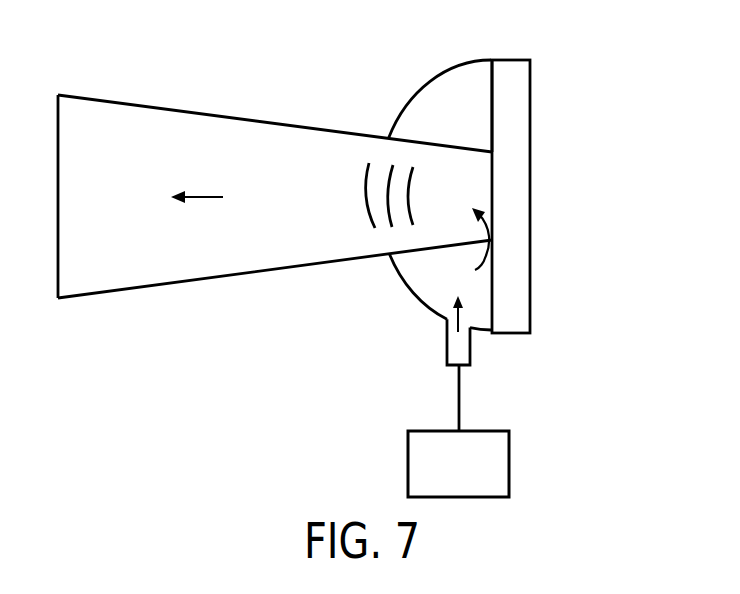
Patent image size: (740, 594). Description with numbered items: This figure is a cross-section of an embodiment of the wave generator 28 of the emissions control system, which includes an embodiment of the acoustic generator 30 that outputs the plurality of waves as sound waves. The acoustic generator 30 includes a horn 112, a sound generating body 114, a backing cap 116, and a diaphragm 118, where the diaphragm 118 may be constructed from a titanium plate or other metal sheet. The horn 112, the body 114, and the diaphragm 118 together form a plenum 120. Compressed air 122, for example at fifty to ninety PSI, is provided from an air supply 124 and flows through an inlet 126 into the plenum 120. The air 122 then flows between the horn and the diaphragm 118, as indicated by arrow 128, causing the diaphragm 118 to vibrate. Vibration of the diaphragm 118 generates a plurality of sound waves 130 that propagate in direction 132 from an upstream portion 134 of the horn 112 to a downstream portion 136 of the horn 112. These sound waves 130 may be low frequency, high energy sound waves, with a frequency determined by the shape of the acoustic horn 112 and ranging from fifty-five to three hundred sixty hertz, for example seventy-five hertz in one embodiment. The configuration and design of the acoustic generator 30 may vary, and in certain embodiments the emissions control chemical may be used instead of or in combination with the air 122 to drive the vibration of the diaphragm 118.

The wave generator 28 is at (268, 76).
The acoustic generator 30 is at (347, 119).
The horn 112 is at (155, 107).
The sound generating body 114 is at (410, 298).
The backing cap 116 is at (532, 193).
The diaphragm 118 is at (492, 98).
The plenum 120 is at (408, 263).
The compressed air 122 is at (447, 325).
The air supply 124 is at (510, 460).
The inlet 126 is at (470, 350).
The arrow 128 is at (492, 272).
The sound waves 130 is at (366, 197).
The direction 132 is at (200, 198).
The upstream portion 134 is at (439, 146).
The downstream portion 136 is at (65, 95).